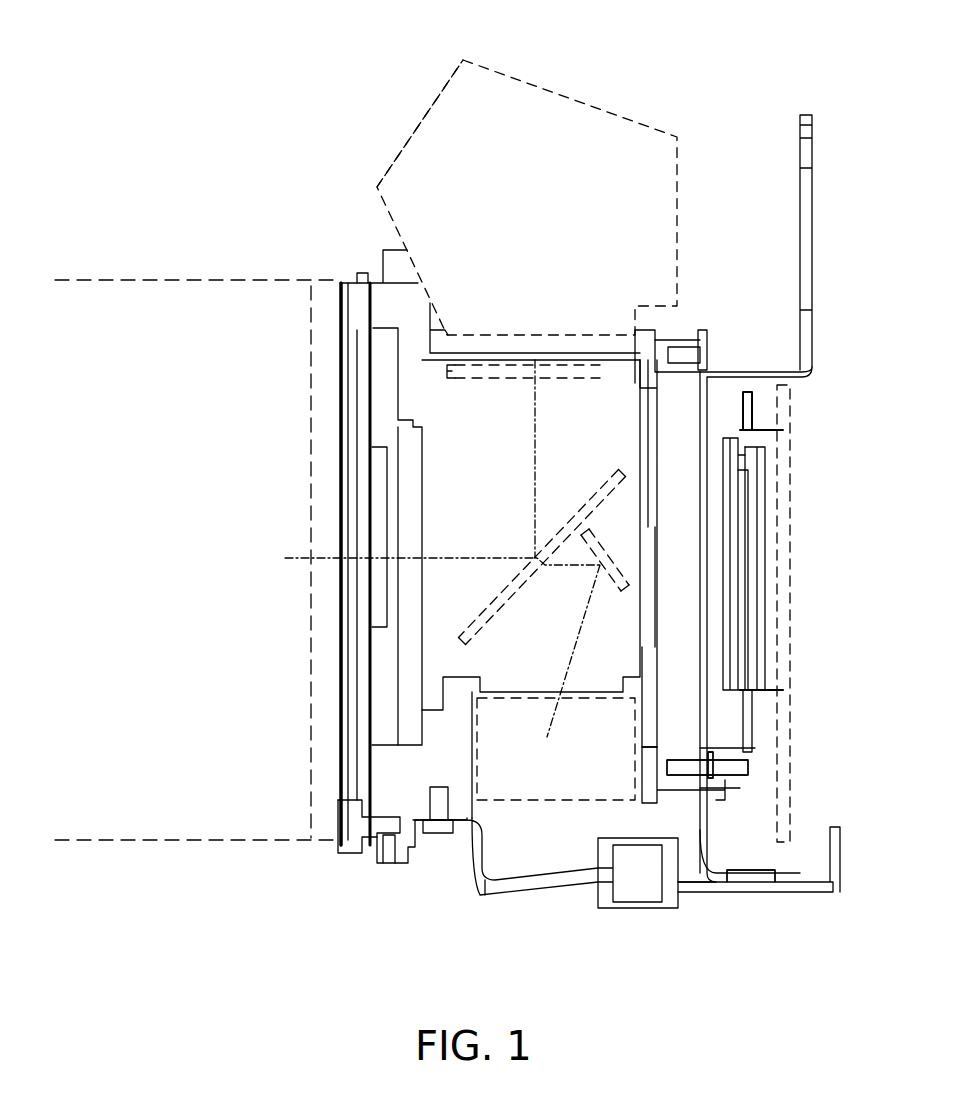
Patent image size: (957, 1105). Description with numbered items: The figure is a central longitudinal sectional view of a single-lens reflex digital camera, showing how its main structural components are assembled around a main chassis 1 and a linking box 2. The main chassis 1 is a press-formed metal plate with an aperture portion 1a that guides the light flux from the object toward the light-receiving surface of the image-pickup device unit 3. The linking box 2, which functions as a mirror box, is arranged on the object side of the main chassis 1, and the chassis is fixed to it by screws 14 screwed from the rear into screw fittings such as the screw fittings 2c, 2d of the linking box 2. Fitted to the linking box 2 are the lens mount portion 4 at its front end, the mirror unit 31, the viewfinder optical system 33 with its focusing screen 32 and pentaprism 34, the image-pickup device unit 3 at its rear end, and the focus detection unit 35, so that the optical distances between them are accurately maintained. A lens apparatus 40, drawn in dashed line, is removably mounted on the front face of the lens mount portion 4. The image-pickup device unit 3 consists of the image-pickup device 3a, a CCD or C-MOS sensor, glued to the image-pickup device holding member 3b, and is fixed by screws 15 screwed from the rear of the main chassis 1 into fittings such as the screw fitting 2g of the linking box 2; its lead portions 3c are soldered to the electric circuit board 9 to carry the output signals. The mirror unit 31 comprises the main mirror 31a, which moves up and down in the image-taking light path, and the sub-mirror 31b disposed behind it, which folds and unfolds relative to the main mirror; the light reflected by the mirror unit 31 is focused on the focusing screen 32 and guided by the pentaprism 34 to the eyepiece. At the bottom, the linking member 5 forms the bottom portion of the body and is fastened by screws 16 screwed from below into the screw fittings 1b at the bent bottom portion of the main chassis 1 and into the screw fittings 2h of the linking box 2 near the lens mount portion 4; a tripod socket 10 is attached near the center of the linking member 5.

The main chassis 1 is at (707, 388).
The aperture portion 1a is at (705, 473).
The screw fittings 1b is at (765, 882).
The linking box 2 is at (393, 297).
The screw fitting 2c is at (668, 337).
The screw fitting 2d is at (657, 780).
The screw fitting 2g is at (723, 782).
The screw fittings 2h is at (392, 800).
The image-pickup device unit 3 is at (770, 565).
The image-pickup device 3a is at (738, 530).
The image-pickup device holding member 3b is at (750, 725).
The lead portions 3c is at (763, 432).
The lens mount portion 4 is at (338, 304).
The linking member 5 is at (540, 888).
The electric circuit board 9 is at (783, 615).
The tripod socket 10 is at (672, 900).
The screws 14 is at (707, 348).
The screws 15 is at (740, 765).
The screws 16 is at (440, 830).
The mirror unit 31 is at (212, 512).
The main mirror 31a is at (465, 640).
The sub-mirror 31b is at (590, 540).
The focusing screen 32 is at (447, 373).
The viewfinder optical system 33 is at (428, 103).
The pentaprism 34 is at (545, 77).
The focus detection unit 35 is at (487, 768).
The lens apparatus 40 is at (160, 280).